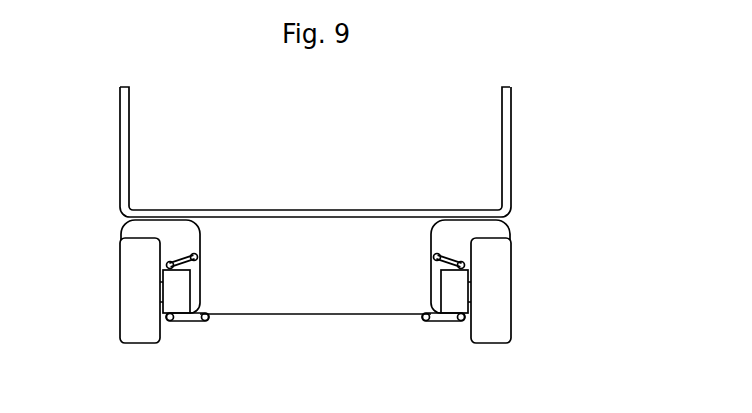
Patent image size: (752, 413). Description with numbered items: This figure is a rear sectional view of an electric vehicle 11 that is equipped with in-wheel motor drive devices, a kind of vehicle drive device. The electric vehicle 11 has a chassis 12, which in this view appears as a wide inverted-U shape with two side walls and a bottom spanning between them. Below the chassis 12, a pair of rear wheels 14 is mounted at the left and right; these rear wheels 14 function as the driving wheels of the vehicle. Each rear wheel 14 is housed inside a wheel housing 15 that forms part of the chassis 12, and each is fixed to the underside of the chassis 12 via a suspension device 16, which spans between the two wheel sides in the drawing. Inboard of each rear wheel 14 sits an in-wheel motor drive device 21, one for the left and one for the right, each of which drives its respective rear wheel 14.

The electric vehicle 11 is at (343, 152).
The chassis 12 is at (162, 145).
The rear wheel 14 is at (132, 303).
The wheel housing 15 is at (142, 230).
The suspension device 16 is at (318, 295).
The in-wheel motor drive device 21 is at (181, 300).